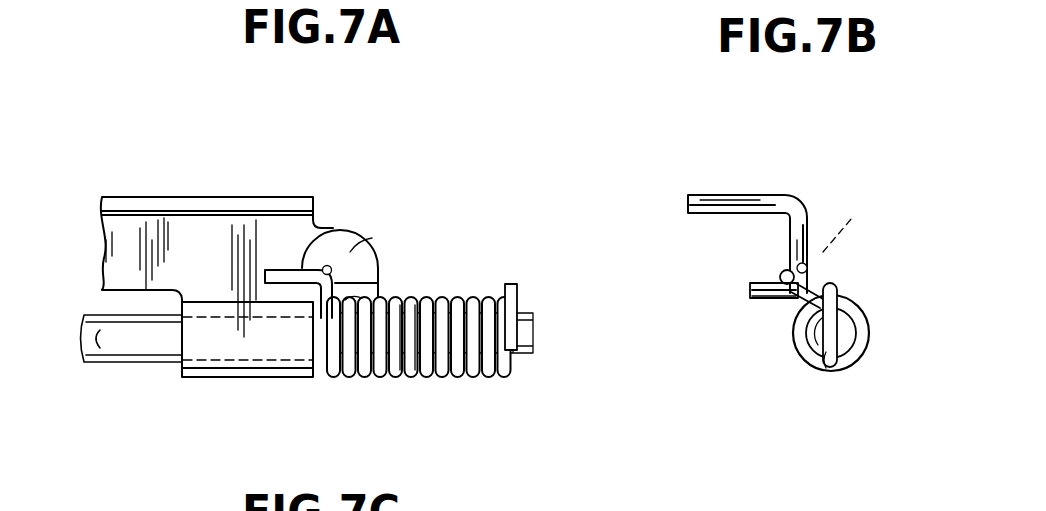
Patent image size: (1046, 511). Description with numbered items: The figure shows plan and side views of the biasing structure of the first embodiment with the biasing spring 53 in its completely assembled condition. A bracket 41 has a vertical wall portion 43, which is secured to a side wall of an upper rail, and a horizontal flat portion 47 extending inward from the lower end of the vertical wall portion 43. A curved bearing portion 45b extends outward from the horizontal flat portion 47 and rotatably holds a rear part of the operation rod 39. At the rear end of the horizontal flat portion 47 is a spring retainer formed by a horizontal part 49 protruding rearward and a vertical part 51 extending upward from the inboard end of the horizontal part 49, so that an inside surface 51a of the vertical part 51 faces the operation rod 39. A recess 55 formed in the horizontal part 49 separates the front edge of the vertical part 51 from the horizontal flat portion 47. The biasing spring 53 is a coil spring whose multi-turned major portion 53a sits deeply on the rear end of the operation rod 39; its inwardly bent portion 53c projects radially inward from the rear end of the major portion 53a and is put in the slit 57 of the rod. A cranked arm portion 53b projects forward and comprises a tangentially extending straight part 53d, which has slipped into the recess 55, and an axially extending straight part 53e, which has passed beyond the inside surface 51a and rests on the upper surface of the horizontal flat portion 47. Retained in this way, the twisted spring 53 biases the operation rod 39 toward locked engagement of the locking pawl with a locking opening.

In FIG. 7A, the operation rod 39 is at (130, 355).
In FIG. 7A, the bracket 41 is at (204, 190).
In FIG. 7B, the bracket 41 is at (748, 188).
In FIG. 7A, the vertical wall portion 43 is at (148, 197).
In FIG. 7B, the vertical wall portion 43 is at (700, 195).
In FIG. 7A, the curved bearing portion 45b is at (207, 355).
In FIG. 7A, the horizontal flat portion 47 is at (115, 236).
In FIG. 7B, the horizontal flat portion 47 is at (808, 223).
In FIG. 7A, the horizontal part 49 is at (355, 257).
In FIG. 7A, the vertical part 51 is at (372, 282).
In FIG. 7B, the vertical part 51 is at (757, 283).
In FIG. 7A, the inside surface 51a is at (360, 307).
In FIG. 7B, the inside surface 51a is at (763, 300).
In FIG. 7A, the biasing spring 53 is at (406, 384).
In FIG. 7B, the biasing spring 53 is at (864, 295).
In FIG. 7A, the multi-turned major portion 53a is at (462, 378).
In FIG. 7B, the multi-turned major portion 53a is at (865, 358).
In FIG. 7A, the cranked arm portion 53b is at (296, 270).
In FIG. 7B, the cranked arm portion 53b is at (783, 271).
In FIG. 7A, the inwardly bent portion 53c is at (512, 290).
In FIG. 7B, the inwardly bent portion 53c is at (838, 327).
In FIG. 7A, the tangentially extending straight part 53d is at (327, 265).
In FIG. 7B, the tangentially extending straight part 53d is at (807, 278).
In FIG. 7A, the axially extending straight part 53e is at (265, 268).
In FIG. 7A, the recess 55 is at (350, 250).
In FIG. 7B, the recess 55 is at (853, 230).
In FIG. 7B, the slit 57 is at (825, 362).